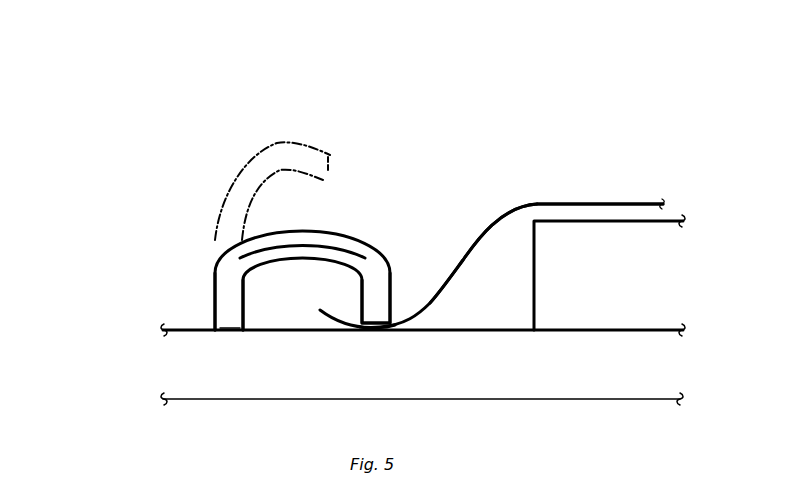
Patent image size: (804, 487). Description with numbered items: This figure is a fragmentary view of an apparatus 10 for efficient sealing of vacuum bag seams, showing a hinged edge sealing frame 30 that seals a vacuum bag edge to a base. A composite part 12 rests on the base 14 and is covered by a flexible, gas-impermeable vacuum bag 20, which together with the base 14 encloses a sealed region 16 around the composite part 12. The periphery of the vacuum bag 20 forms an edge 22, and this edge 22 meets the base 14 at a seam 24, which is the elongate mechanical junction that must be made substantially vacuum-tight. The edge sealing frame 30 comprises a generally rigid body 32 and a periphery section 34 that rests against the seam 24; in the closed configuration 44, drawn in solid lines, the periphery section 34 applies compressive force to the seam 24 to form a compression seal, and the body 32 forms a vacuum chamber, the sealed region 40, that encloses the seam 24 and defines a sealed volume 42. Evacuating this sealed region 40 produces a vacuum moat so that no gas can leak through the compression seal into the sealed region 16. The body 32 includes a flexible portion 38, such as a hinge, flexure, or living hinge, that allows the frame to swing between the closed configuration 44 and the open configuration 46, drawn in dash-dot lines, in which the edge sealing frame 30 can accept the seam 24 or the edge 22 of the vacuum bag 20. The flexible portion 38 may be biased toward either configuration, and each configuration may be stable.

The apparatus for efficient sealing of vacuum bag seams 10 is at (150, 61).
The composite part 12 is at (623, 222).
The base 14 is at (543, 399).
The sealed region 16 is at (507, 255).
The vacuum bag 20 is at (580, 204).
The edge 22 is at (322, 305).
The seam 24 is at (375, 329).
The edge sealing frame 30 is at (359, 238).
The body 32 is at (325, 230).
The periphery section 34 is at (392, 290).
The flexible portion 38 is at (213, 290).
The sealed region 40 is at (265, 318).
The sealed volume 42 is at (282, 317).
The closed configuration 44 is at (128, 267).
The open configuration 46 is at (158, 146).